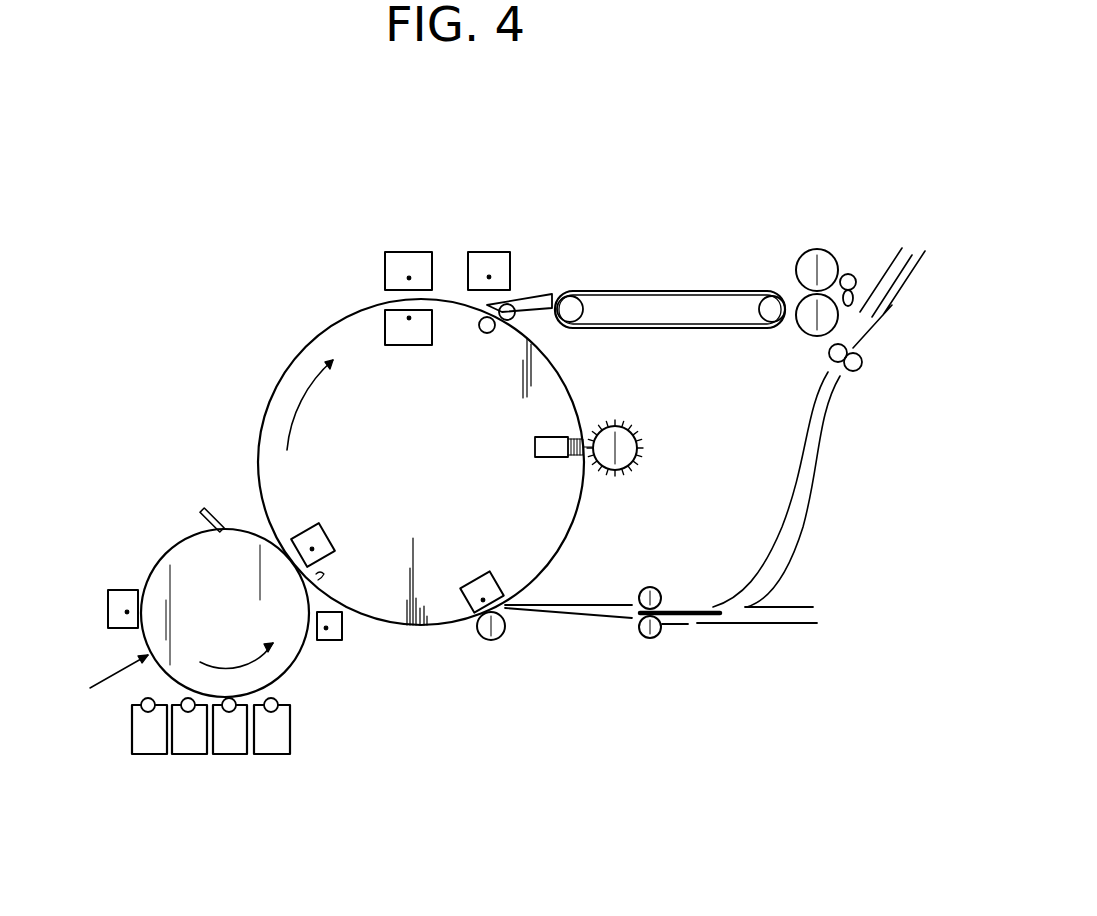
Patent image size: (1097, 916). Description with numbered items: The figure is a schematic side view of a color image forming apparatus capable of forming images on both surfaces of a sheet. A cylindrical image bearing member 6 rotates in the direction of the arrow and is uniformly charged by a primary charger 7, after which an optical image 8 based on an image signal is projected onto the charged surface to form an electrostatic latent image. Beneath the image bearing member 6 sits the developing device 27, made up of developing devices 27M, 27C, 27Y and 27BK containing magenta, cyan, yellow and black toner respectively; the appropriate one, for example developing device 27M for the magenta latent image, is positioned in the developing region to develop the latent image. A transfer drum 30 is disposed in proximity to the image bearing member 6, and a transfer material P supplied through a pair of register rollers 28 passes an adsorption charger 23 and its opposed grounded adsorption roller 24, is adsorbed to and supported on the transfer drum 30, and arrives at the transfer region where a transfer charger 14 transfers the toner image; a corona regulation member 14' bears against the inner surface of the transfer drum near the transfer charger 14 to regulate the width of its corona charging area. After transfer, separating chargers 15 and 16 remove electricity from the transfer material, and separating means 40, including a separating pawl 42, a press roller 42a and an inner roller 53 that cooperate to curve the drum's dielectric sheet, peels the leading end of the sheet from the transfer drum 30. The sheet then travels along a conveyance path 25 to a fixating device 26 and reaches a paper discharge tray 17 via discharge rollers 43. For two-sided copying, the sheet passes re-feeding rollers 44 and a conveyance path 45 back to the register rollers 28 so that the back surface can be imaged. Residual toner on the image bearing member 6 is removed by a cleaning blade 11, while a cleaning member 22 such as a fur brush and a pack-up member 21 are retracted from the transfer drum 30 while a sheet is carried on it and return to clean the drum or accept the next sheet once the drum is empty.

The image bearing member 6 is at (158, 557).
The primary charger 7 is at (108, 595).
The optical image 8 is at (118, 672).
The cleaning blade 11 is at (215, 508).
The transfer charger 14 is at (334, 538).
The corona regulation member 14' is at (360, 648).
The separating charger 15 is at (386, 332).
The separating charger 16 is at (405, 252).
The paper discharge tray 17 is at (492, 252).
The pack-up member 21 is at (535, 447).
The cleaning member 22 is at (643, 428).
The adsorption charger 23 is at (489, 573).
The adsorption roller 24 is at (499, 640).
The conveyance path 25 is at (703, 290).
The fixating device 26 is at (815, 249).
The developing device 27 is at (218, 791).
The developing device 27BK is at (130, 737).
The developing device 27Y is at (181, 755).
The developing device 27C is at (225, 755).
The developing device 27M is at (314, 730).
The register rollers 28 is at (650, 587).
The transfer drum 30 is at (574, 392).
The separating means 40 is at (535, 262).
The separating pawl 42 is at (546, 294).
The press roller 42a is at (517, 320).
The discharge rollers 43 is at (851, 274).
The re-feeding rollers 44 is at (858, 373).
The conveyance path 45 is at (808, 485).
The roller 53 is at (487, 334).
The transfer material P is at (690, 606).